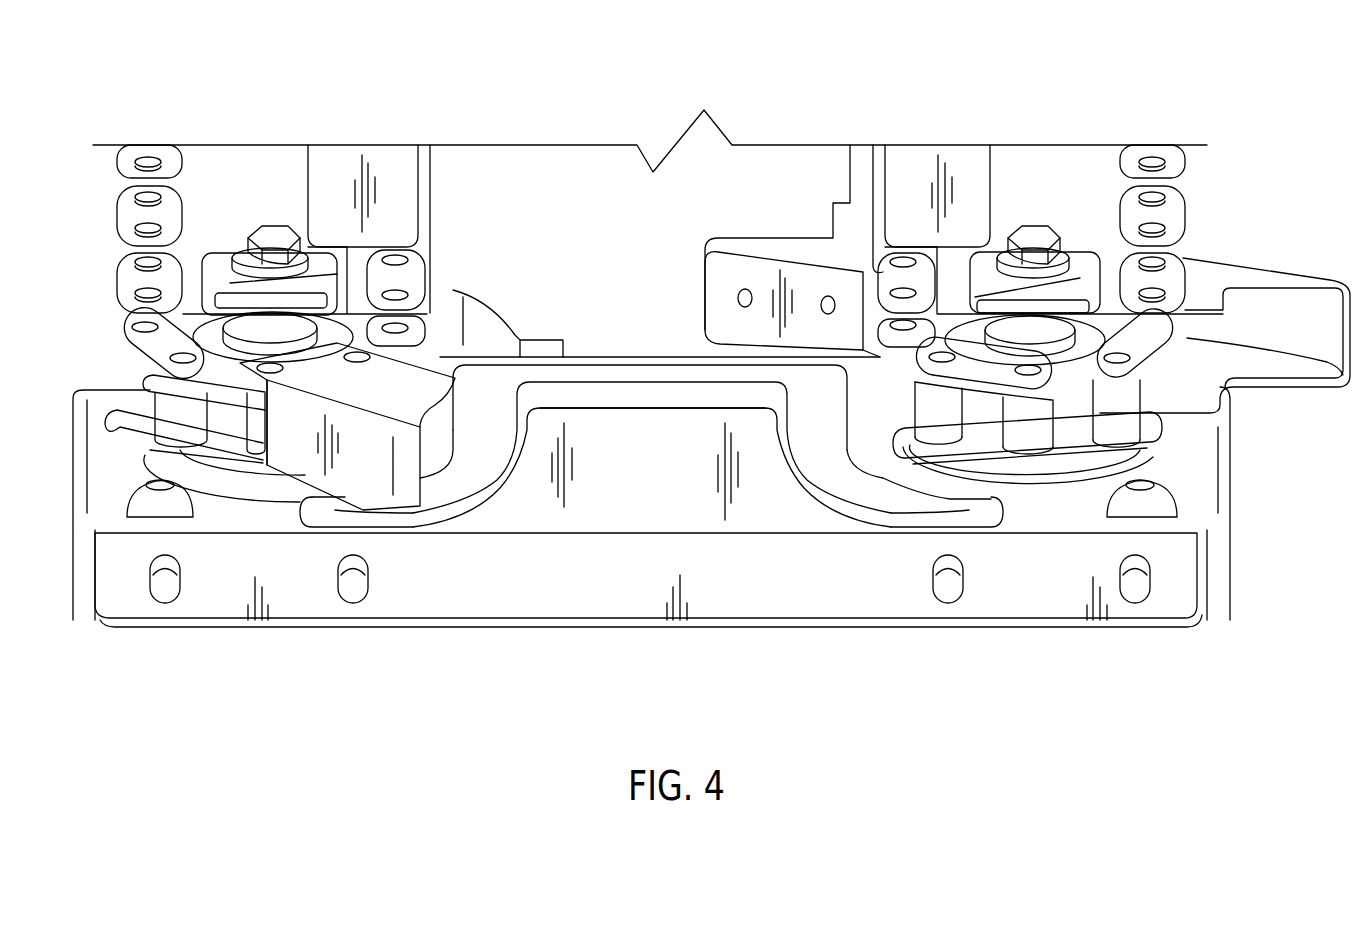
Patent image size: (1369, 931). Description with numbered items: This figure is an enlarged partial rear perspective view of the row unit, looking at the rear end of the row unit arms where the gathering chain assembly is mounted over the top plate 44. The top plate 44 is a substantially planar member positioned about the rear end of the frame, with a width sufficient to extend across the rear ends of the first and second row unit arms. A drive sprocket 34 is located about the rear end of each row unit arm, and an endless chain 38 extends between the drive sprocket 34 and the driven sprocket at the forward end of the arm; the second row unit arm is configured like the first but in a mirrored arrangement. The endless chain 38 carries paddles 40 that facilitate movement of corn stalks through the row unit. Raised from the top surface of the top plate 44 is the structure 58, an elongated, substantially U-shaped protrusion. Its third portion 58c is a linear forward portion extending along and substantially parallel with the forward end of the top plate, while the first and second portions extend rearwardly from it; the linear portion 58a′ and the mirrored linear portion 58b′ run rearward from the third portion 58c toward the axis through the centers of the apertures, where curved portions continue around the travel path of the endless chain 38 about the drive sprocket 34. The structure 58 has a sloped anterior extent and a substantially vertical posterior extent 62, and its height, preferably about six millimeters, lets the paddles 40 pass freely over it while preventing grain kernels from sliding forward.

The drive sprocket 34 is at (270, 325).
The endless chain 38 is at (407, 310).
The paddles 40 is at (797, 245).
The top plate 44 is at (1180, 467).
The structure 58 is at (648, 480).
The linear portion 58a′ is at (483, 440).
The linear portion 58b′ is at (802, 437).
The third portion 58c is at (640, 377).
The vertical posterior extent 62 is at (590, 400).